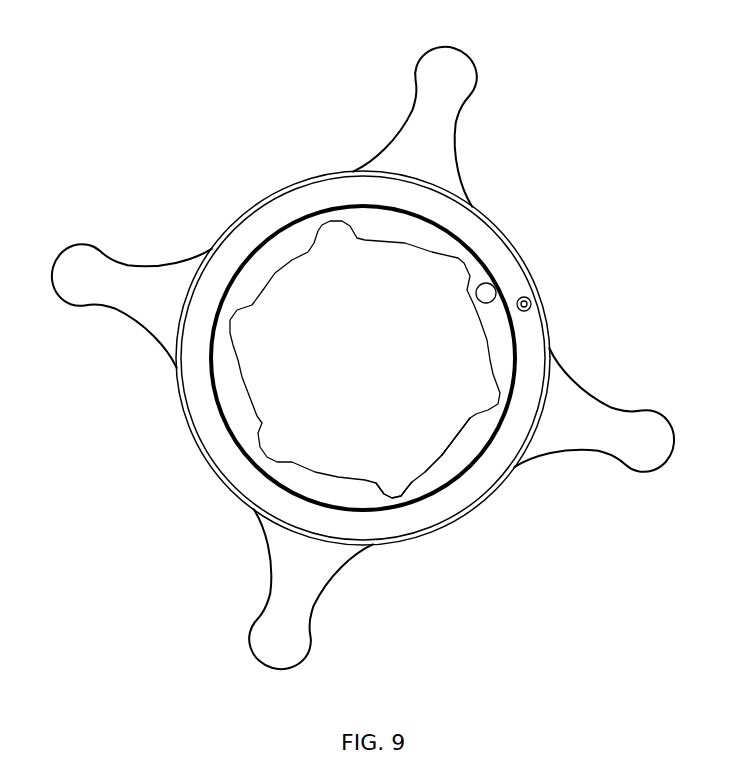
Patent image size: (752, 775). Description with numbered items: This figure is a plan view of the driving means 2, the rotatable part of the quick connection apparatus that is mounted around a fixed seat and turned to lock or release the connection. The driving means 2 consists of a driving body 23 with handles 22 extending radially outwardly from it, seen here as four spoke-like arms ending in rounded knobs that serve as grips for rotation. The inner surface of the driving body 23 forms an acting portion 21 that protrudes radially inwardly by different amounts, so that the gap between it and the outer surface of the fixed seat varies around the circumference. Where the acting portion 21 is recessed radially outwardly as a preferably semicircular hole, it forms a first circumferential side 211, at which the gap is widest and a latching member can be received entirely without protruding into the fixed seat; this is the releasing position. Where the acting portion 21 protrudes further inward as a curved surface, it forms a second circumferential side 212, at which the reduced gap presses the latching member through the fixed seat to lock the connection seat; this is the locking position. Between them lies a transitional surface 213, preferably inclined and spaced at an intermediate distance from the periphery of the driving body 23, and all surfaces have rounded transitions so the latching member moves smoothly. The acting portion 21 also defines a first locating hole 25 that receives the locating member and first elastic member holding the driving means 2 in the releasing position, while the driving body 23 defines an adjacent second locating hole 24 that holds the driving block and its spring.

The driving means 2 is at (180, 128).
The acting portion 21 is at (405, 436).
The first circumferential side 211 is at (400, 496).
The second circumferential side 212 is at (445, 457).
The transitional surface 213 is at (430, 468).
The handle 22 is at (122, 295).
The driving body 23 is at (217, 433).
The second locating hole 24 is at (532, 308).
The first locating hole 25 is at (493, 284).